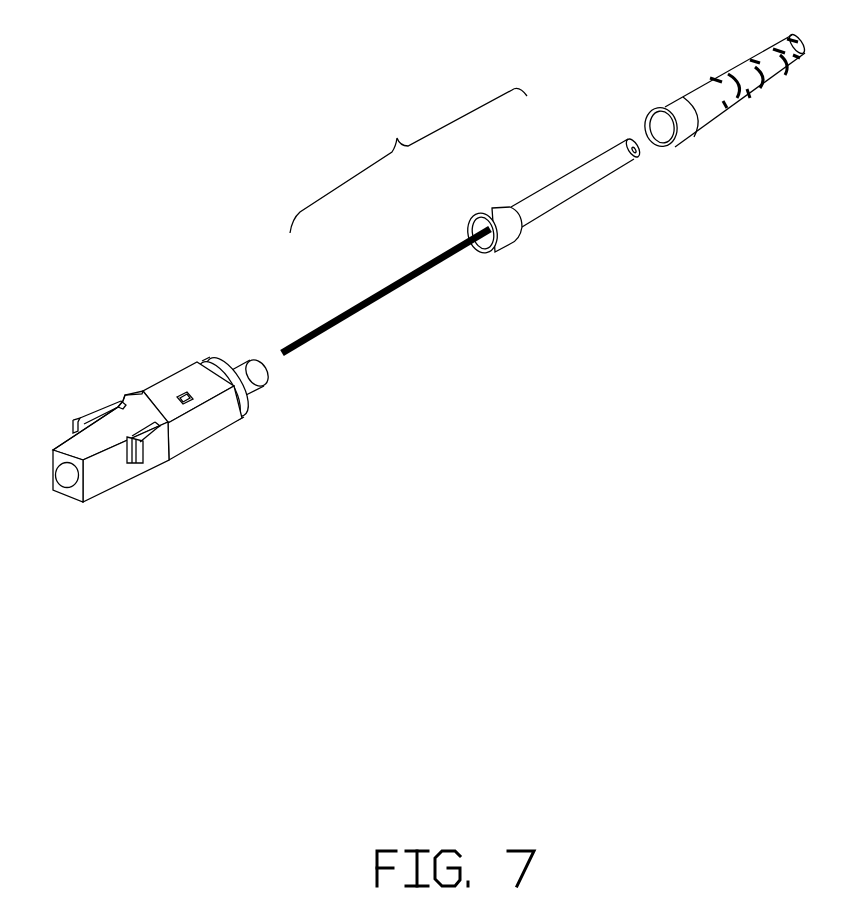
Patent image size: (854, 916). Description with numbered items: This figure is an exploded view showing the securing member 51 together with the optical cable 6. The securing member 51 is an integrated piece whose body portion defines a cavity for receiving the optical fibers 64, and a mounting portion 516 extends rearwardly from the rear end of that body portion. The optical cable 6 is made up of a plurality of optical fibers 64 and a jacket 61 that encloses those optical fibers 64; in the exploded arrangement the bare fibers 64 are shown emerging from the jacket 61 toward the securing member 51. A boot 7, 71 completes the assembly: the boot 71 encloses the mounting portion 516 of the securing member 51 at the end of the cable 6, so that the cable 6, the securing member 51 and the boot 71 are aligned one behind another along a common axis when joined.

The securing member 51 is at (205, 417).
The mounting portion 516 is at (250, 366).
The optical cable 6 is at (408, 160).
The jacket 61 is at (582, 178).
The optical fibers 64 is at (368, 297).
The boot 7 is at (700, 82).
The boot 71 is at (682, 110).